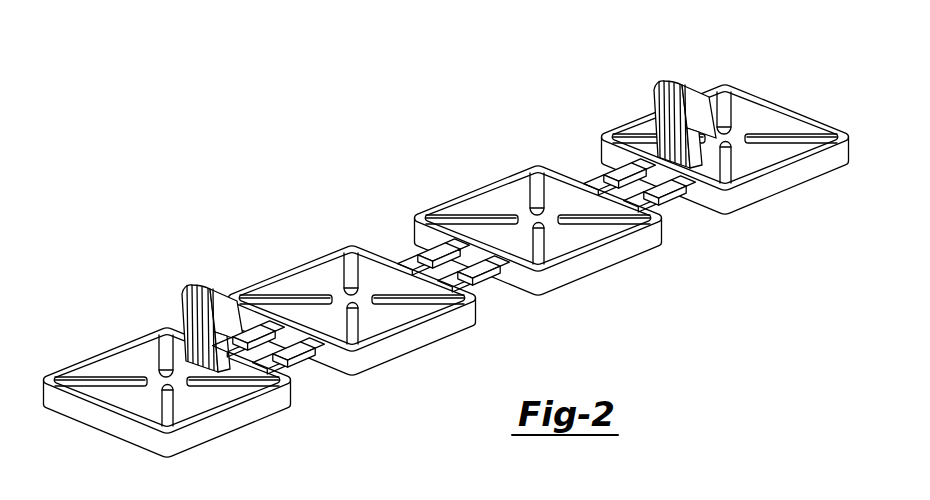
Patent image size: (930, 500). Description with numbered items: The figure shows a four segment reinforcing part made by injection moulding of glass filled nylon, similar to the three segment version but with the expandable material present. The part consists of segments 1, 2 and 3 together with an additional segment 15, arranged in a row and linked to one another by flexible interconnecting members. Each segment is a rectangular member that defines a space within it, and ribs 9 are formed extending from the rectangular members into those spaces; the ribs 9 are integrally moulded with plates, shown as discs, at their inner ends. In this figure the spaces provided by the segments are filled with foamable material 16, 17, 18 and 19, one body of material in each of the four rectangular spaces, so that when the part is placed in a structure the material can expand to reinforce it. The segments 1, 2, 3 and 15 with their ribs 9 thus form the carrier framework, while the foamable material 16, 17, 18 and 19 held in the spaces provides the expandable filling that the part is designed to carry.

The segment 1 is at (750, 113).
The segment 2 is at (498, 200).
The segment 3 is at (312, 278).
The additional segment 15 is at (130, 355).
The ribs 9 is at (48, 375).
The foamable material 16 is at (215, 400).
The foamable material 17 is at (397, 318).
The foamable material 18 is at (572, 238).
The foamable material 19 is at (763, 157).